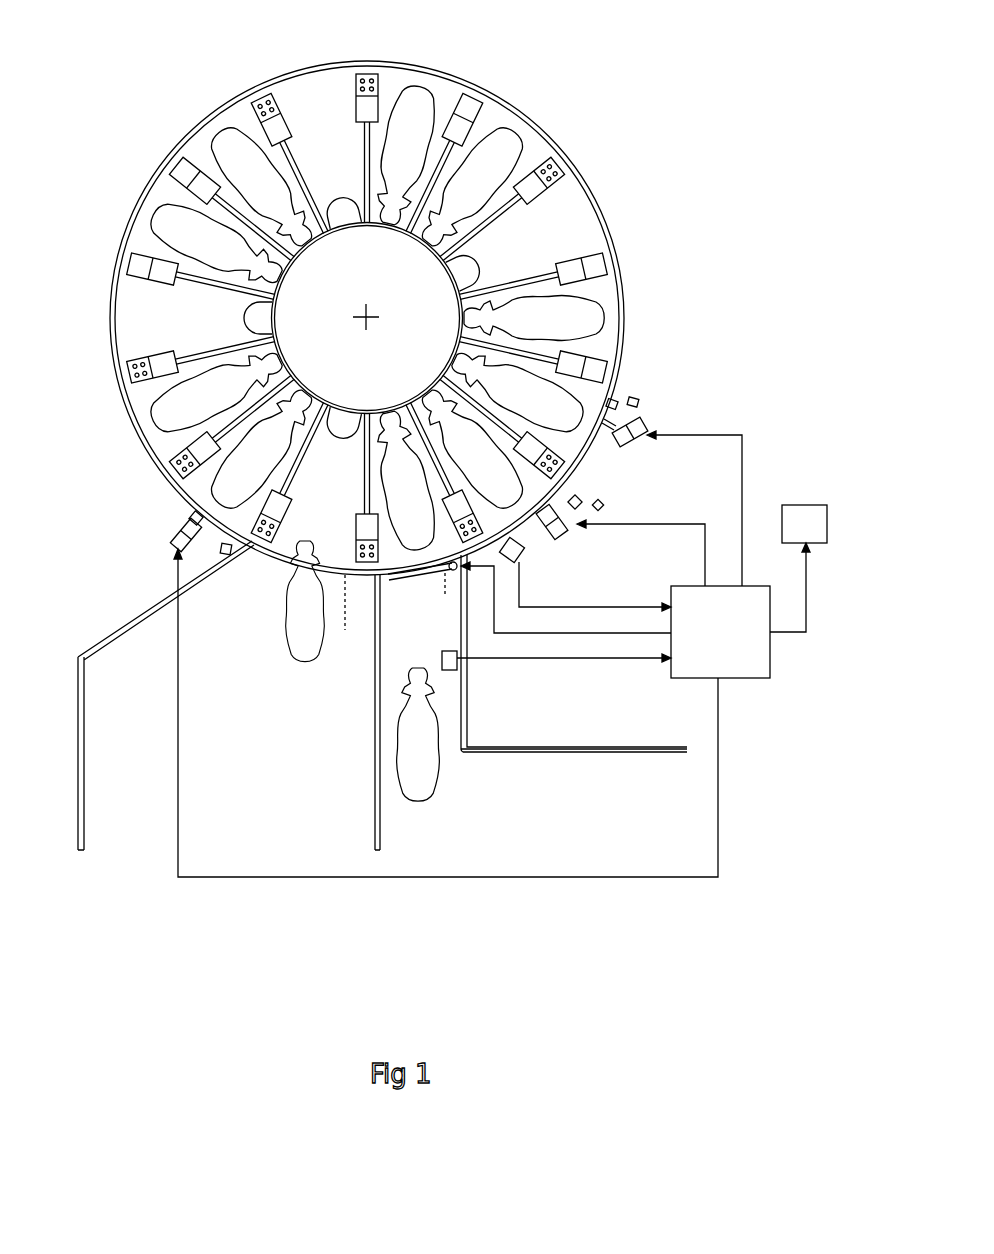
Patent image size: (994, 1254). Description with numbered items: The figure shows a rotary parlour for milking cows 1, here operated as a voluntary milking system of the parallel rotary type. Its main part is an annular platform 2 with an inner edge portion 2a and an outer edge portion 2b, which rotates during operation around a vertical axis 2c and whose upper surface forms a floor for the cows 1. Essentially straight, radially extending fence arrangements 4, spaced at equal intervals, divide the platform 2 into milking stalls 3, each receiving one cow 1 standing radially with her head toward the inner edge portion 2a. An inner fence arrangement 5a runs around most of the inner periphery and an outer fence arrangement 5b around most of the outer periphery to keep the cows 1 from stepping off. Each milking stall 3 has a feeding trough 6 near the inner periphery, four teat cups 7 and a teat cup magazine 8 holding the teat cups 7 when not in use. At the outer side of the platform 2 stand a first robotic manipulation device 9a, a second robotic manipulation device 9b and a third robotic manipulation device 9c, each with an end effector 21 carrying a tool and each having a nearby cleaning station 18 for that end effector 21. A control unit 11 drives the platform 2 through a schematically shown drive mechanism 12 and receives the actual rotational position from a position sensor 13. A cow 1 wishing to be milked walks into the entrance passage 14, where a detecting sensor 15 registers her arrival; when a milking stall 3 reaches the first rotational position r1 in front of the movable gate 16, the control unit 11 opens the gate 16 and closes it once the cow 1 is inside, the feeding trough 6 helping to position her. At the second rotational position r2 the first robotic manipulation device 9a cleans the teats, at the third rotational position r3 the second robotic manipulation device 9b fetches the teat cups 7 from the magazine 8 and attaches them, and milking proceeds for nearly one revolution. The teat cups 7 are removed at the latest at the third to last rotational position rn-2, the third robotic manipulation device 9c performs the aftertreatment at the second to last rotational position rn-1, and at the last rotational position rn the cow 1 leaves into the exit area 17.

The cow 1 is at (232, 152).
The annular platform 2 is at (534, 152).
The inner edge portion 2a is at (420, 395).
The outer edge portion 2b is at (628, 330).
The vertical axis 2c is at (360, 307).
The milking stall 3 is at (195, 200).
The fence arrangement 4 is at (140, 275).
The inner fence arrangement 5a is at (297, 378).
The outer fence arrangement 5b is at (601, 198).
The feeding trough 6 is at (462, 281).
The teat cup 7 is at (271, 119).
The teat cup magazine 8 is at (279, 99).
The first robotic manipulation device 9a is at (565, 526).
The second robotic manipulation device 9b is at (642, 437).
The third robotic manipulation device 9c is at (180, 540).
The control unit 11 is at (733, 644).
The drive mechanism 12 is at (805, 520).
The position sensor 13 is at (520, 565).
The entrance passage 14 is at (440, 694).
The detecting sensor 15 is at (458, 662).
The movable gate 16 is at (392, 580).
The exit area 17 is at (325, 746).
The cleaning station 18 is at (232, 554).
The end effector 21 is at (190, 516).
The first rotational position r1 is at (445, 597).
The second rotational position r2 is at (500, 520).
The third rotational position r3 is at (555, 445).
The last rotational position rn is at (319, 606).
The second to last rotational position rn-1 is at (200, 483).
The third to last rotational position rn-2 is at (140, 385).